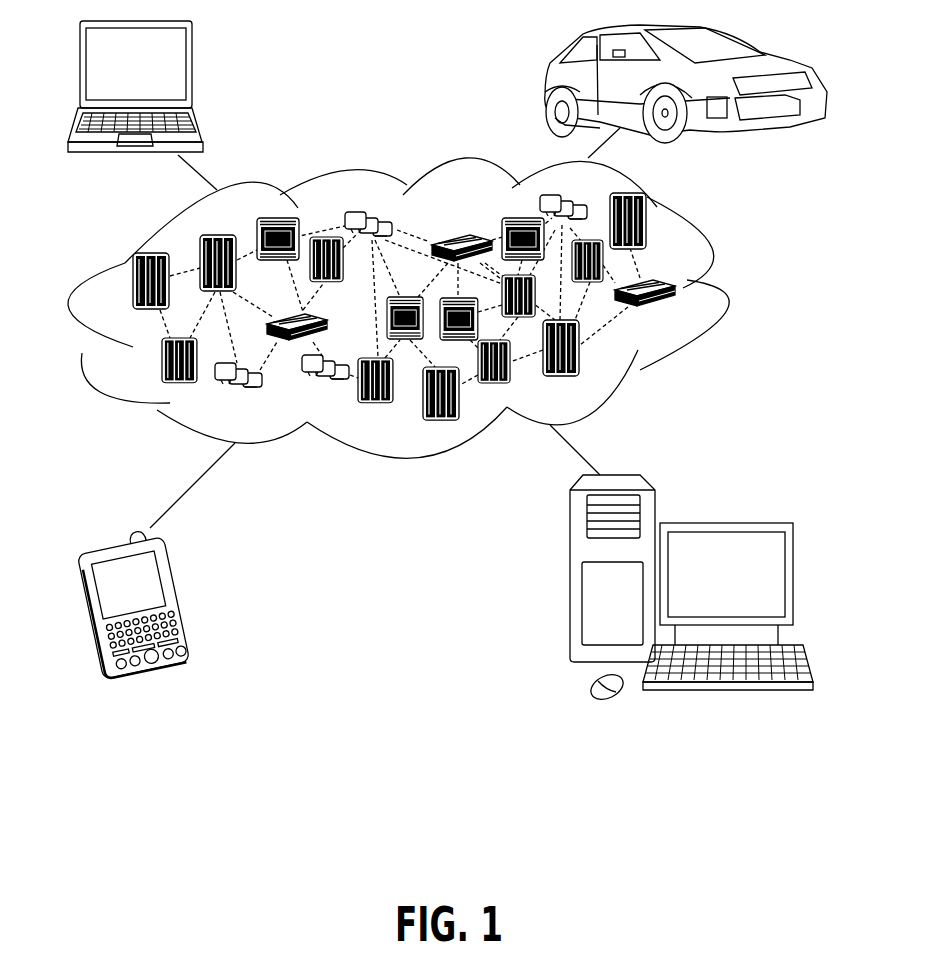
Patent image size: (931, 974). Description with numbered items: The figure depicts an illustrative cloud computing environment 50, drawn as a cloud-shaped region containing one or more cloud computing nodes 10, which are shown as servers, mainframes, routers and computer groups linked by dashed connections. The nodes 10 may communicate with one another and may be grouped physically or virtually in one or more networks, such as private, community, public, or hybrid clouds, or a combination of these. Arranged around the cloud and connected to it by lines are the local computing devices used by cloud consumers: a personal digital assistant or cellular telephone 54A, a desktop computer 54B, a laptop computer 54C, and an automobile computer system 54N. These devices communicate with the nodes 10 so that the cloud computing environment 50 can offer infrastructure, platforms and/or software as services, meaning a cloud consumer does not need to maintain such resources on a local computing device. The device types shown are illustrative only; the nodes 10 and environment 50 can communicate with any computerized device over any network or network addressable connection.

The cloud computing nodes 10 is at (684, 316).
The cloud computing environment 50 is at (720, 293).
The personal digital assistant or cellular telephone 54A is at (184, 603).
The desktop computer 54B is at (723, 522).
The laptop computer 54C is at (194, 72).
The automobile computer system 54N is at (545, 82).